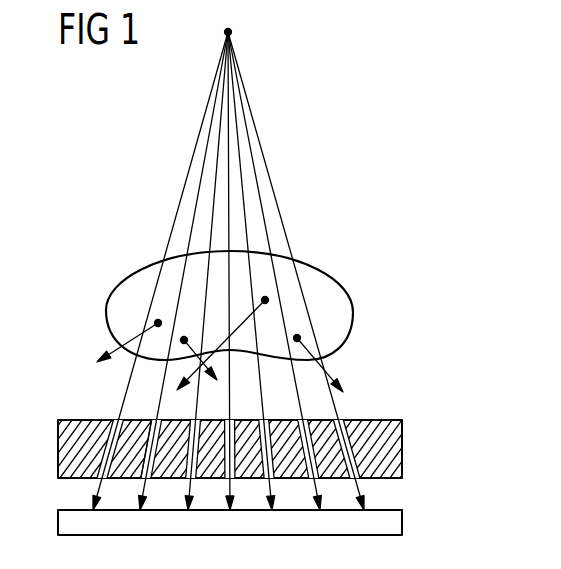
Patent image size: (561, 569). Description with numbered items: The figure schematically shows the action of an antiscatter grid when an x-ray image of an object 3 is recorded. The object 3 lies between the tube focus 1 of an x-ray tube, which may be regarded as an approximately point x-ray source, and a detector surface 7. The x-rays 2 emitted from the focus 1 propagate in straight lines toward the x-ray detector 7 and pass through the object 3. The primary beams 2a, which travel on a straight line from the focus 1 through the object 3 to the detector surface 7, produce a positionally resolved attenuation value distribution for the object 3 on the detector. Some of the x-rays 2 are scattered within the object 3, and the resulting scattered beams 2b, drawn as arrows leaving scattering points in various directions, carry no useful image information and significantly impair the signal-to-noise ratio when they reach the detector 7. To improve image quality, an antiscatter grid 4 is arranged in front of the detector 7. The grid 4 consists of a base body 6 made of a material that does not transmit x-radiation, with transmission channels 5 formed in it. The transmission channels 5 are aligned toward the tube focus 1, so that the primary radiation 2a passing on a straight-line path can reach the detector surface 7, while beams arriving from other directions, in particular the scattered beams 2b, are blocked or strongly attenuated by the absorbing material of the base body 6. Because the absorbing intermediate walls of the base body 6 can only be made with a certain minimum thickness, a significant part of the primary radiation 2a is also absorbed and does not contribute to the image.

The tube focus 1 is at (228, 32).
The x-rays 2 is at (248, 271).
The primary beams 2a is at (342, 412).
The scattered beams 2b is at (333, 372).
The object 3 is at (242, 308).
The antiscatter grid 4 is at (236, 422).
The transmission channels 5 is at (112, 418).
The base body 6 is at (138, 418).
The detector surface 7 is at (402, 522).